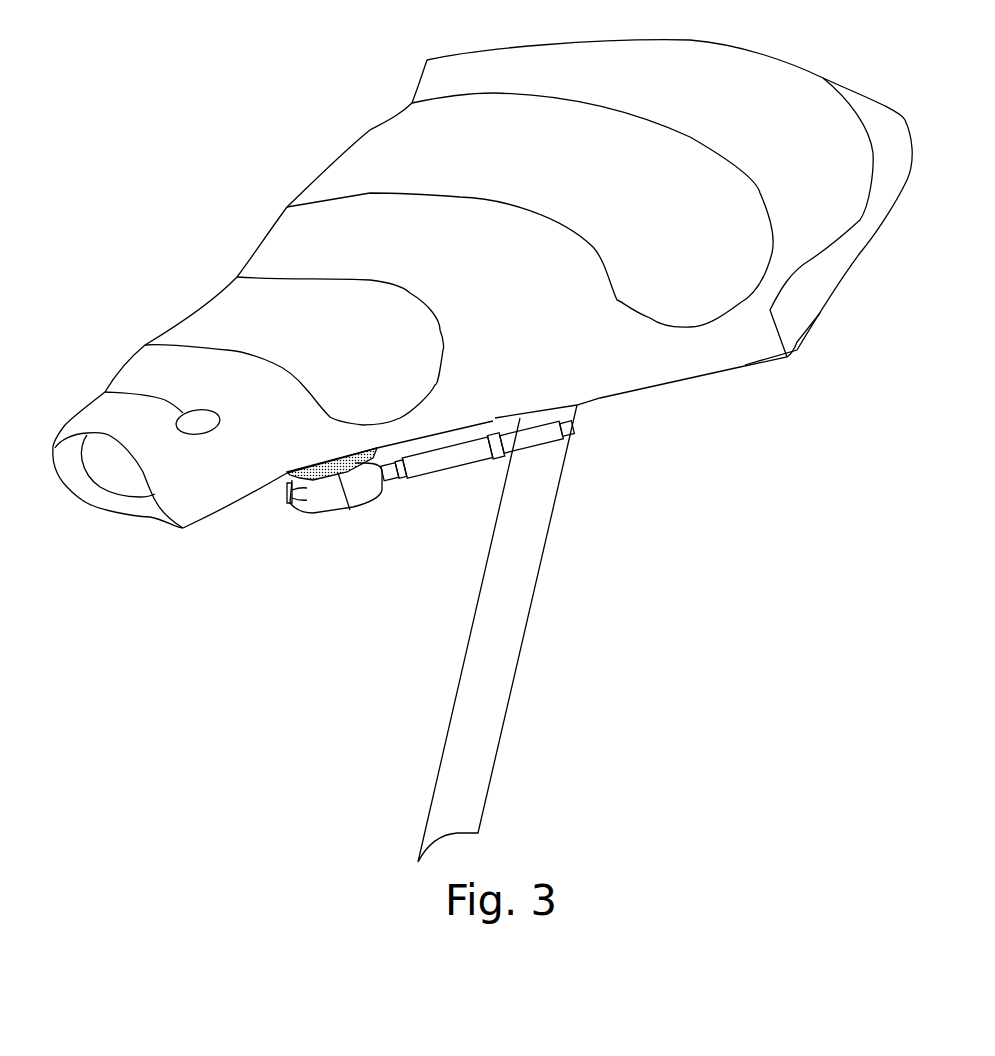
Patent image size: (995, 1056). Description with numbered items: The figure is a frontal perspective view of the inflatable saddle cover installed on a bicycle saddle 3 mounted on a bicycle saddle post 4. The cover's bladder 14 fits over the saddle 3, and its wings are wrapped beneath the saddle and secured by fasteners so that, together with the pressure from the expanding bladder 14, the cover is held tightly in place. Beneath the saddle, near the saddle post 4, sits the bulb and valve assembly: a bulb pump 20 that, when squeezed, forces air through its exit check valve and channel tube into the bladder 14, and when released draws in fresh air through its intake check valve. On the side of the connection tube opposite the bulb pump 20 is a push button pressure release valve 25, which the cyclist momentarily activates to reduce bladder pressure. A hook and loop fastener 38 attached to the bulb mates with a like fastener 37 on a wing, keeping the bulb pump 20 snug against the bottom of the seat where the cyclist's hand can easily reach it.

The bladder 14 is at (388, 170).
The saddle 3 is at (125, 485).
The bicycle saddle post 4 is at (500, 667).
The pressure release valve 25 is at (533, 442).
The bulb pump 20 is at (367, 493).
The hook and loop fastener 37 is at (280, 478).
The hook and loop fastener 38 is at (350, 510).